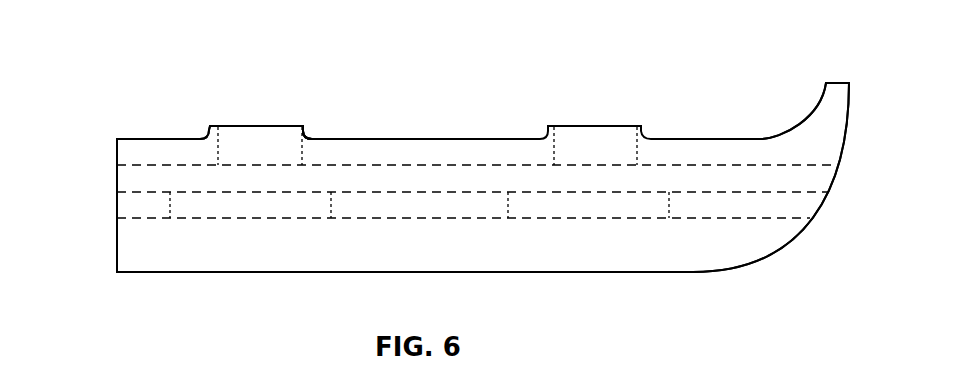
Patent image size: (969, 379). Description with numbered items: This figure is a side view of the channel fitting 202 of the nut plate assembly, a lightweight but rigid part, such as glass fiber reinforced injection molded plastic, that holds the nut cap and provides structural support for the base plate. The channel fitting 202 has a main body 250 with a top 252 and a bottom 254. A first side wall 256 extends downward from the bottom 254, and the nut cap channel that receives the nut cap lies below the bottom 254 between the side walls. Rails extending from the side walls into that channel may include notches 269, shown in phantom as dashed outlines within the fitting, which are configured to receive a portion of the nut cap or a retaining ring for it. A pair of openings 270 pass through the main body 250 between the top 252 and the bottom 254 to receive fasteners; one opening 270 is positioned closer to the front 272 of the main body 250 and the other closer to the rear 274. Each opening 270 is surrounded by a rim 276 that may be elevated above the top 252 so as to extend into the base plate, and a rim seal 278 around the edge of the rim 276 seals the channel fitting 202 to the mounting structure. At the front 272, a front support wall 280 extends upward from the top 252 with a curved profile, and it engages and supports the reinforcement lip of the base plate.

The channel fitting 202 is at (457, 63).
The main body 250 is at (445, 138).
The top 252 is at (148, 138).
The bottom 254 is at (147, 165).
The first side wall 256 is at (585, 250).
The notches 269 is at (210, 212).
The opening 270 is at (244, 123).
The front 272 is at (838, 168).
The rear 274 is at (117, 156).
The rim 276 is at (311, 138).
The rim seal 278 is at (303, 131).
The front support wall 280 is at (813, 98).